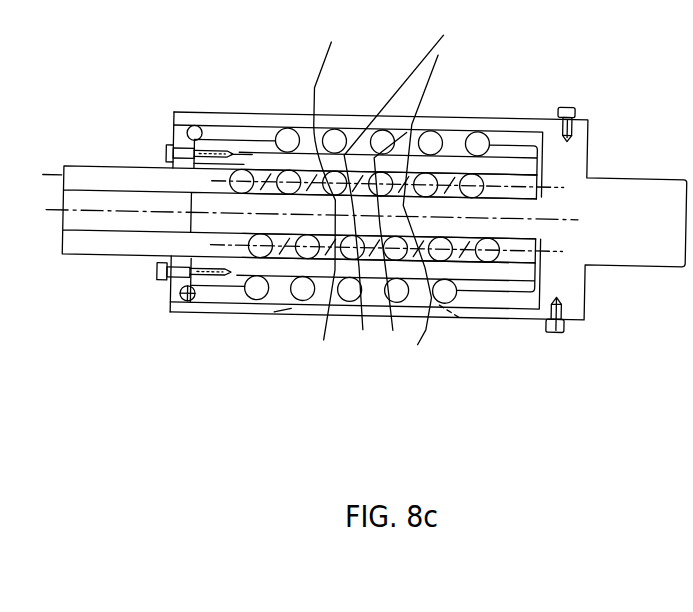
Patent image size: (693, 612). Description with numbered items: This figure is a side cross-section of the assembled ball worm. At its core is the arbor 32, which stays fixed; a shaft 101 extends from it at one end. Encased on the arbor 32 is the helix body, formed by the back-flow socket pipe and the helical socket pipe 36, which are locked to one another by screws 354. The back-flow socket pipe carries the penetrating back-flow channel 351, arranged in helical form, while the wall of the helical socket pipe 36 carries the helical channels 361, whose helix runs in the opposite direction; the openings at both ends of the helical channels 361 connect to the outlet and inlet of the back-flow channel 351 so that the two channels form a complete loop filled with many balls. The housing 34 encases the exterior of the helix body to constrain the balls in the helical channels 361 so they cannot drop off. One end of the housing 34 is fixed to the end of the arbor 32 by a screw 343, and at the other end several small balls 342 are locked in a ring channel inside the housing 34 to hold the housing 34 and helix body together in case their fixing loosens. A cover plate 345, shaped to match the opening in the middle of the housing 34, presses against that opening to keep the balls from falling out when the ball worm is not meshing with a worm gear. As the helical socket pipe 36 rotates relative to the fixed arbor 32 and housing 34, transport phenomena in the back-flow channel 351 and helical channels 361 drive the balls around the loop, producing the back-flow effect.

The shaft 101 is at (89, 169).
The arbor 32 is at (466, 225).
The housing 34 is at (512, 320).
The helical socket pipe 36 is at (238, 275).
The small balls 342 is at (202, 124).
The screw 343 is at (567, 108).
The cover plate 345 is at (370, 316).
The back-flow channel 351 is at (298, 290).
The screws 354 is at (168, 143).
The helical channels 361 is at (437, 57).